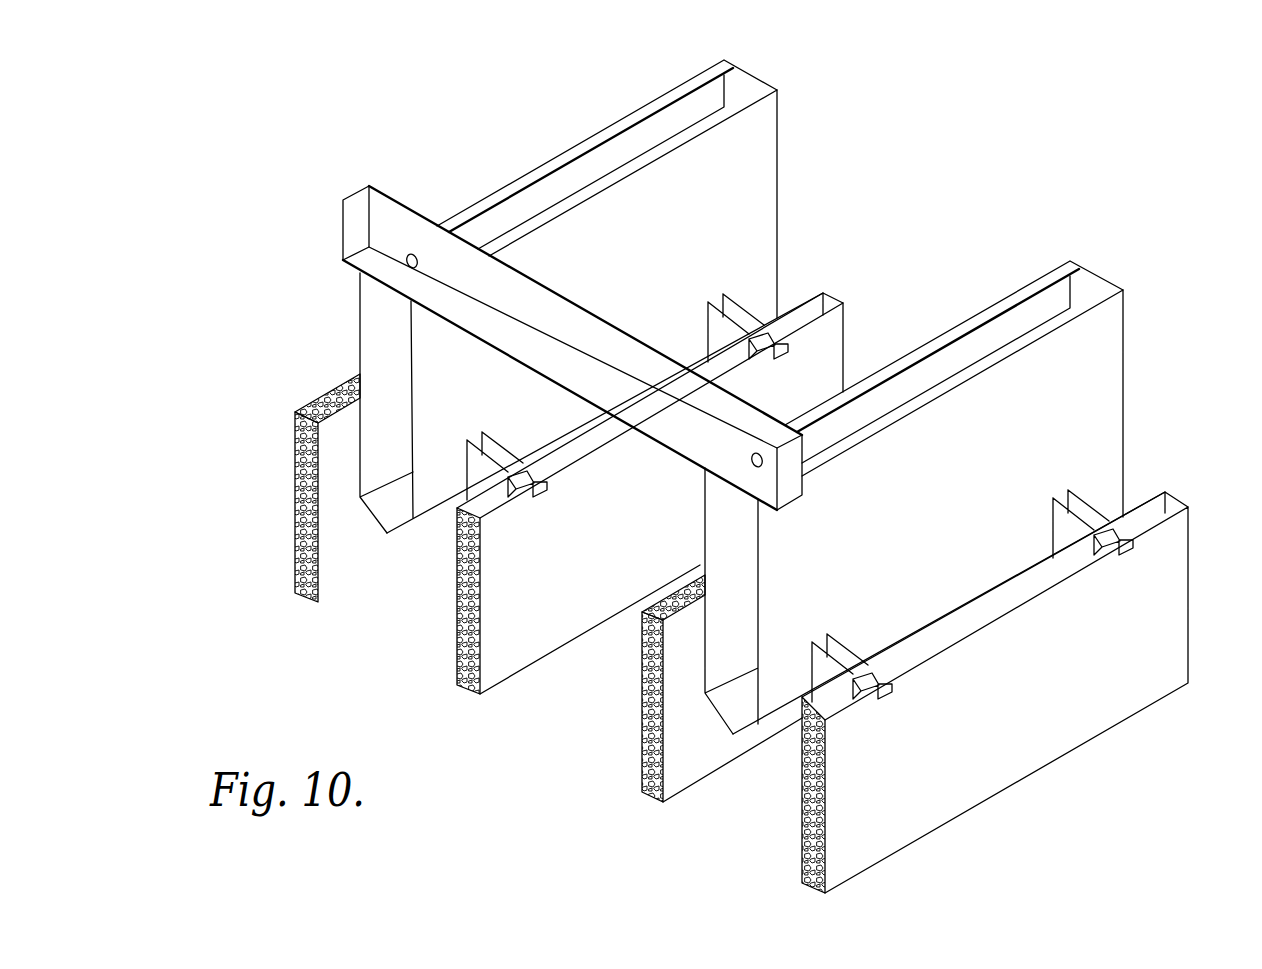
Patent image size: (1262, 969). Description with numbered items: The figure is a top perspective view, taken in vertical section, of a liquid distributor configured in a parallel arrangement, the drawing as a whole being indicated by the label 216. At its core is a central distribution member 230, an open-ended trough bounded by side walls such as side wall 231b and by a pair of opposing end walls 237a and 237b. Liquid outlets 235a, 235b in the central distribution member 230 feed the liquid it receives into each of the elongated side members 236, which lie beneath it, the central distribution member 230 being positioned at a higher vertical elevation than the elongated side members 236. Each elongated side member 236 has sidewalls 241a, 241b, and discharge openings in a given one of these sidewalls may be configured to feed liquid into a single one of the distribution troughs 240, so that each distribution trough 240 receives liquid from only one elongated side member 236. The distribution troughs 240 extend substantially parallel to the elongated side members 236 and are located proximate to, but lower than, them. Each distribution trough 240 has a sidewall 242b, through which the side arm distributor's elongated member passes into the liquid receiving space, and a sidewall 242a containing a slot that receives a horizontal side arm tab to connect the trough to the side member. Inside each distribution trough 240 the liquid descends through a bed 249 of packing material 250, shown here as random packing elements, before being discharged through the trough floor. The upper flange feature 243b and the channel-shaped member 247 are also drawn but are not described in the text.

The wall form assembly 216 is at (397, 88).
The central distribution member 230 is at (587, 307).
The side wall 231b is at (515, 288).
The liquid outlet 235a is at (752, 458).
The liquid outlet 235b is at (412, 254).
The elongated side member 236 is at (568, 150).
The end wall 237a is at (790, 490).
The end wall 237b is at (355, 228).
The distribution trough 240 is at (447, 673).
The sidewall 241a is at (757, 128).
The sidewall 241b is at (692, 108).
The sidewall 242a is at (510, 658).
The sidewall 242b is at (690, 765).
The rail flange 243b is at (737, 83).
The stud channel 247 is at (390, 503).
The bed 249 is at (291, 400).
The packing material 250 is at (643, 772).